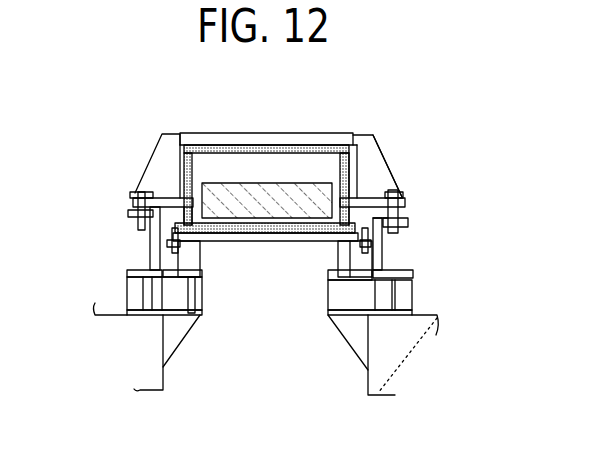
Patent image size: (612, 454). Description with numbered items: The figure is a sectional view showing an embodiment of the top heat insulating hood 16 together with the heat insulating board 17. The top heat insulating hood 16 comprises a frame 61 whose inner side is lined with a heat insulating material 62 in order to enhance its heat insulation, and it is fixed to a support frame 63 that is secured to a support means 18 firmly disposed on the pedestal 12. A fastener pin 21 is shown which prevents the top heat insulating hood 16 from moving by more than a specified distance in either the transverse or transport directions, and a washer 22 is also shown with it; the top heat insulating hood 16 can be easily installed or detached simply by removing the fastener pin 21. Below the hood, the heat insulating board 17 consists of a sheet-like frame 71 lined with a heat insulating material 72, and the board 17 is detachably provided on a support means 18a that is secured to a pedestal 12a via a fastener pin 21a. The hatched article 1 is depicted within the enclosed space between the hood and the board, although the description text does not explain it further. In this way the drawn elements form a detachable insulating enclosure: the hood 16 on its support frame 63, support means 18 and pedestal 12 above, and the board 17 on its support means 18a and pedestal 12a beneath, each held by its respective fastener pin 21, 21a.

The workpiece / article 1 is at (260, 190).
The pedestal 12 is at (413, 292).
The pedestal 12a is at (202, 303).
The top heat insulating hood 16 is at (300, 131).
The heat insulating board 17 is at (303, 247).
The support means 18 is at (383, 245).
The support means 18a is at (190, 277).
The fastener pin 21 is at (130, 232).
The fastener pin 21a is at (172, 252).
The washer 22 is at (405, 213).
The frame 61 is at (215, 143).
The heat insulating material 62 is at (250, 148).
The support frame 63 is at (368, 197).
The sheet-like frame 71 is at (223, 243).
The heat insulating material 72 is at (268, 243).